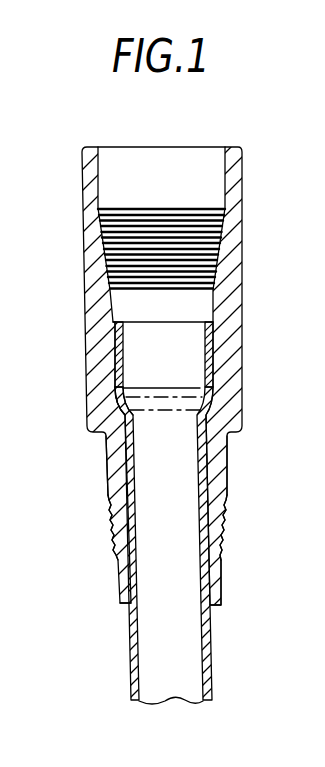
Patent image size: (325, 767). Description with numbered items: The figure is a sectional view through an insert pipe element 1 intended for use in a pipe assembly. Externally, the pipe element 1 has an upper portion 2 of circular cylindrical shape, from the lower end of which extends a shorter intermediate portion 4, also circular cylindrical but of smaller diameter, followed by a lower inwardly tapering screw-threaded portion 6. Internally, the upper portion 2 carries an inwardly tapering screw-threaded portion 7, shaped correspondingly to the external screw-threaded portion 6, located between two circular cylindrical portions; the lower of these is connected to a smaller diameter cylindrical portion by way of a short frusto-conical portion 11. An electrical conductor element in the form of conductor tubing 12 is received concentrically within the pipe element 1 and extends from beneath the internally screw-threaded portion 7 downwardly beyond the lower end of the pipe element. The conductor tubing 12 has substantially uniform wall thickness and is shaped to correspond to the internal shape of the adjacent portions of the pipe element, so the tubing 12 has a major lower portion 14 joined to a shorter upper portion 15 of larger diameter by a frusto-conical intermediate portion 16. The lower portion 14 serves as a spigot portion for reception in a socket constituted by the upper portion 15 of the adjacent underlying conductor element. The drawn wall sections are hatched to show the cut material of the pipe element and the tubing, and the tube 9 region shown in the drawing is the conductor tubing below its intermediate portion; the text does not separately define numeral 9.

The insert pipe element 1 is at (246, 176).
The upper portion 2 is at (85, 237).
The intermediate portion 4 is at (108, 472).
The screw-threaded portion 6 is at (220, 548).
The screw-threaded portion 7 is at (225, 229).
The tube 9 is at (210, 478).
The frusto-conical portion 11 is at (117, 399).
The conductor tubing 12 is at (191, 318).
The lower portion 14 is at (208, 643).
The upper portion 15 is at (207, 356).
The frusto-conical intermediate portion 16 is at (200, 396).